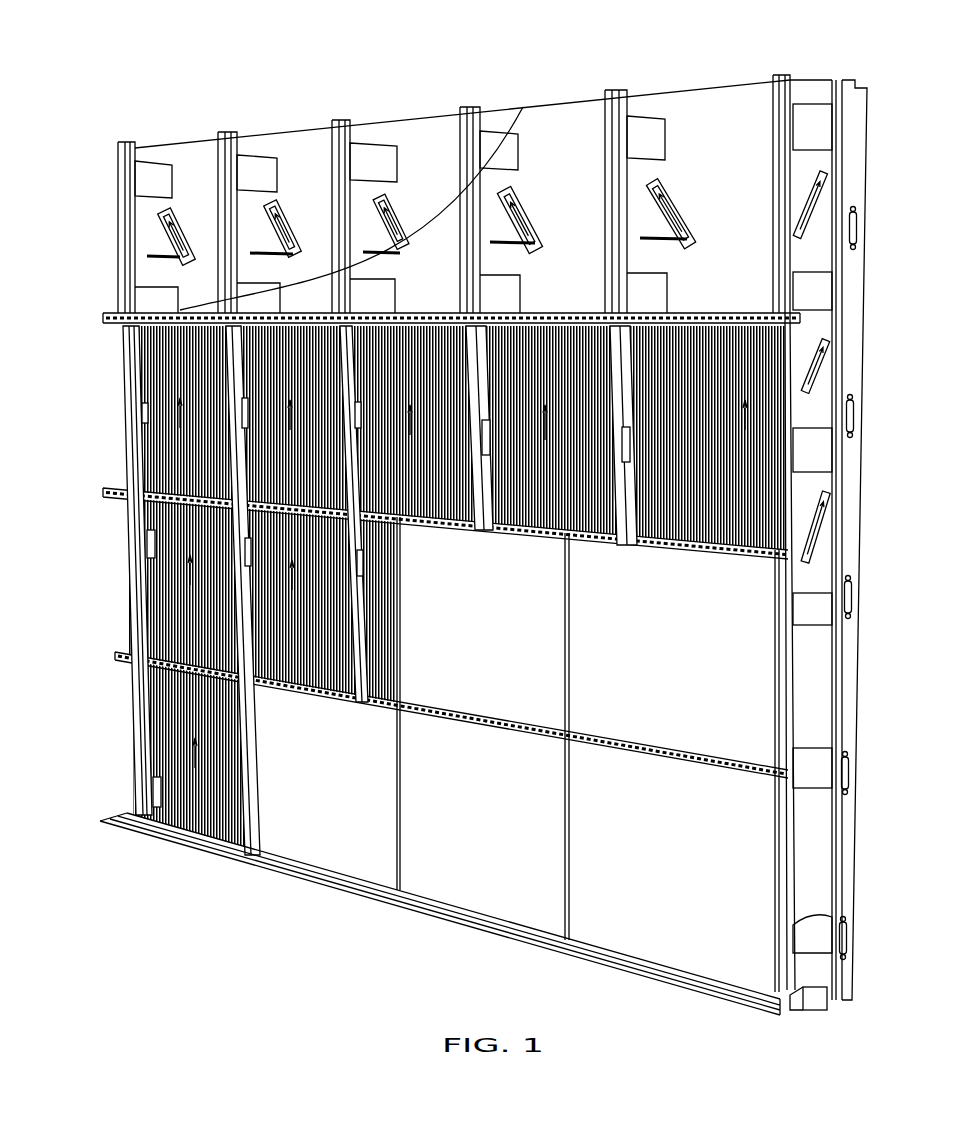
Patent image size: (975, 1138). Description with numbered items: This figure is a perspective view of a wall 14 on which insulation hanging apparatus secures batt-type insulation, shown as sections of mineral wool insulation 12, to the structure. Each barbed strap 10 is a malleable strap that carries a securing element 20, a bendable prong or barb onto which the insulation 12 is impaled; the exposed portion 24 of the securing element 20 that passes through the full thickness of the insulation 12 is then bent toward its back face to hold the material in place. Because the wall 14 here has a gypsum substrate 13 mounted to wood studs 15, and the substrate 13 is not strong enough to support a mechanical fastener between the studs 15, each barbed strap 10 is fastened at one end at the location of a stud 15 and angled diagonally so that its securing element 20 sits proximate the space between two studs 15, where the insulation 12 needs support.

The barbed strap 10 is at (185, 207).
The mineral wool insulation 12 is at (167, 620).
The gypsum substrate 13 is at (727, 115).
The wall 14 is at (289, 913).
The wood stud 15 is at (855, 130).
The securing element 20 is at (165, 262).
The exposed portion 24 is at (140, 399).